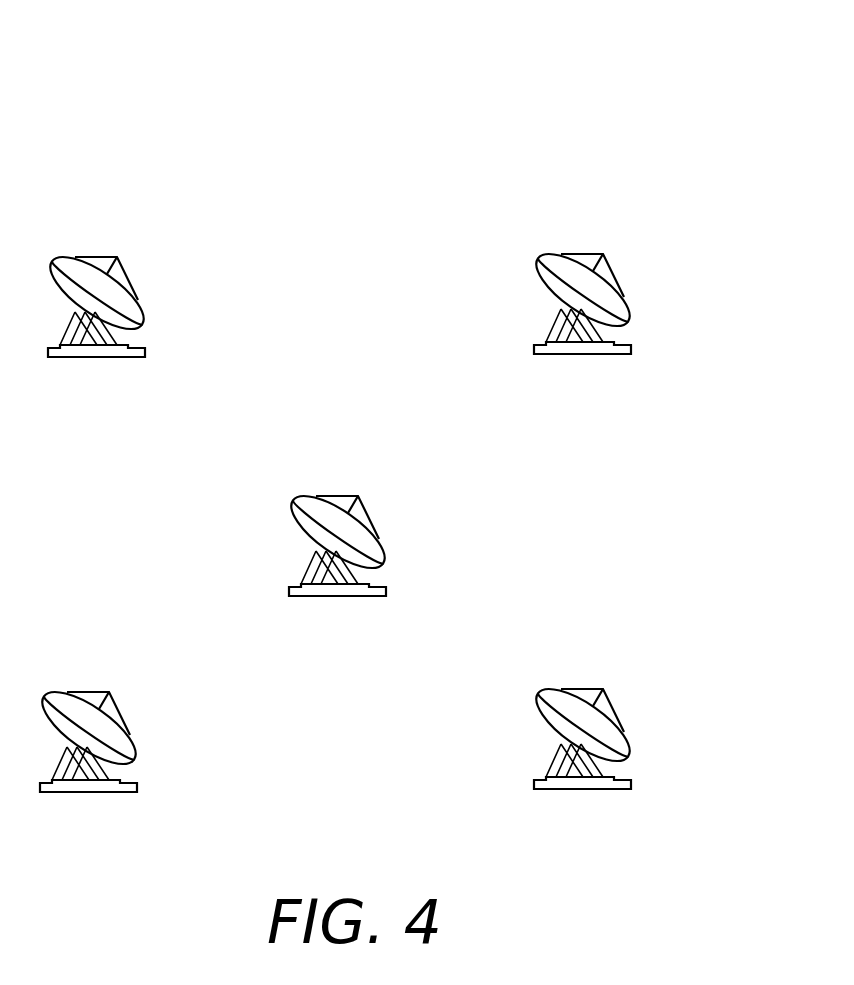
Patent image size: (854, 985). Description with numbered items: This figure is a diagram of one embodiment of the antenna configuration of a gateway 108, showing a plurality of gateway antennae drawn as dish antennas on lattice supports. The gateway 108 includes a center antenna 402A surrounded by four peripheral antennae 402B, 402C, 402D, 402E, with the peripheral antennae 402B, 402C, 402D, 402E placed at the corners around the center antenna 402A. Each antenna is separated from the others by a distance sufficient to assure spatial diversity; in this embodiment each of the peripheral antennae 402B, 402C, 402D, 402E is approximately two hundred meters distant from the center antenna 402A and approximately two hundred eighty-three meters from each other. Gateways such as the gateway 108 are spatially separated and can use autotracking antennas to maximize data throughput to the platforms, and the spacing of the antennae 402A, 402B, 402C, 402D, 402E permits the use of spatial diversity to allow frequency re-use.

The gateway 108 is at (691, 95).
The center antenna 402A is at (385, 557).
The peripheral antenna 402B is at (143, 318).
The peripheral antenna 402C is at (632, 313).
The peripheral antenna 402D is at (632, 743).
The peripheral antenna 402E is at (137, 752).